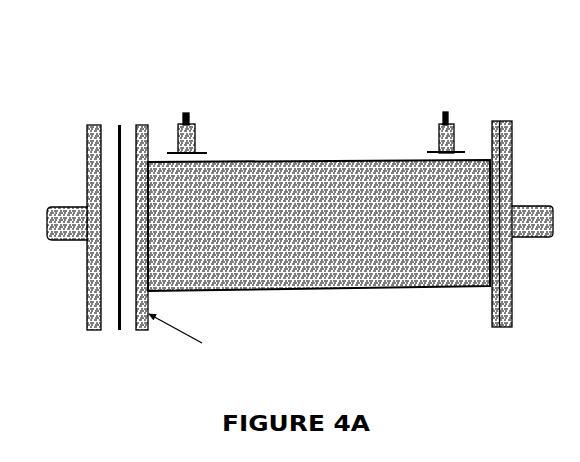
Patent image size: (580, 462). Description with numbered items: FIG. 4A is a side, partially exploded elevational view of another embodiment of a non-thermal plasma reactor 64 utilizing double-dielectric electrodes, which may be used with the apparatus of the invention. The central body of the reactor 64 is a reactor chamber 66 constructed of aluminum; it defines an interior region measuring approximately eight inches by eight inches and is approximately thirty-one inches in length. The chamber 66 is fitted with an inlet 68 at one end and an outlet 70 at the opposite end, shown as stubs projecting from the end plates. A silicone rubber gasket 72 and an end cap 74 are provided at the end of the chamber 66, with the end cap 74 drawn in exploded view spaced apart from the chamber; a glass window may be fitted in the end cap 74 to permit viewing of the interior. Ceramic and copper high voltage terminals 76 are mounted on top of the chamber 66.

The plasma reactor 64 is at (305, 121).
The reactor chamber 66 is at (377, 289).
The inlet 68 is at (537, 206).
The outlet 70 is at (50, 240).
The silicone rubber gasket 72 is at (117, 127).
The end cap 74 is at (87, 127).
The high voltage terminal 76 is at (192, 135).